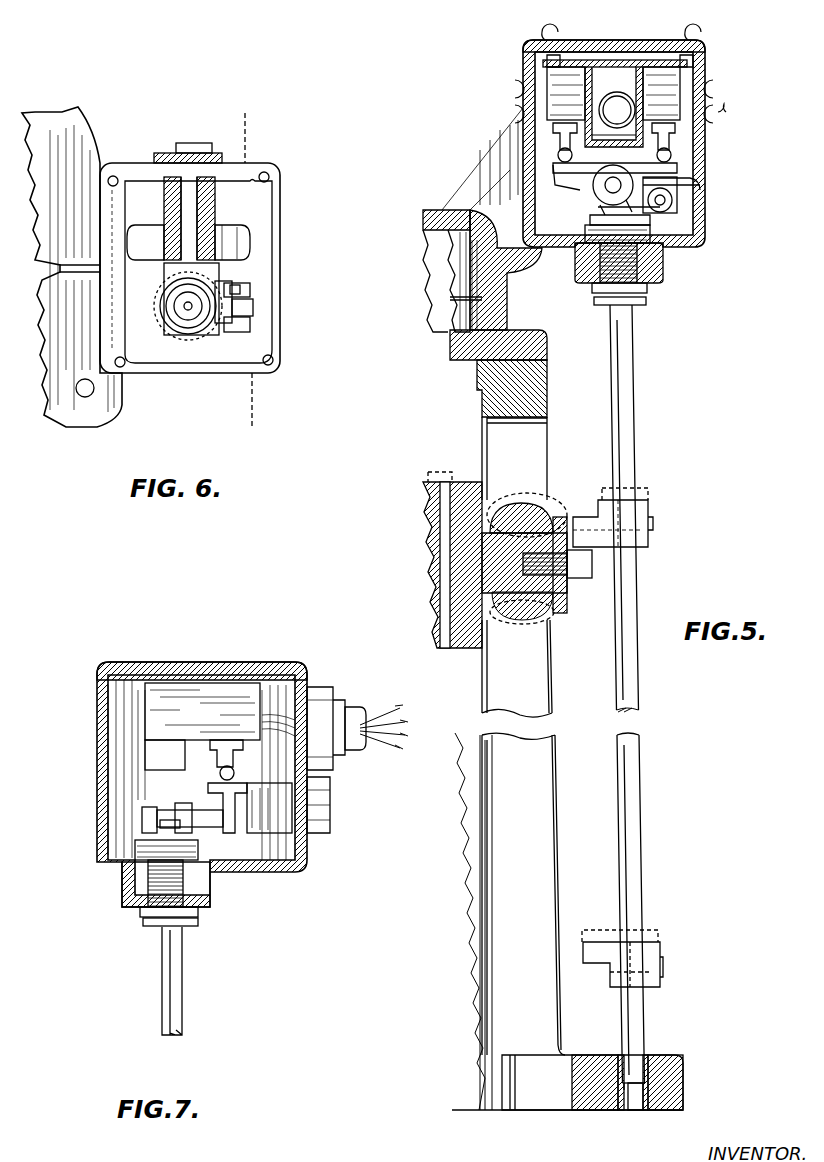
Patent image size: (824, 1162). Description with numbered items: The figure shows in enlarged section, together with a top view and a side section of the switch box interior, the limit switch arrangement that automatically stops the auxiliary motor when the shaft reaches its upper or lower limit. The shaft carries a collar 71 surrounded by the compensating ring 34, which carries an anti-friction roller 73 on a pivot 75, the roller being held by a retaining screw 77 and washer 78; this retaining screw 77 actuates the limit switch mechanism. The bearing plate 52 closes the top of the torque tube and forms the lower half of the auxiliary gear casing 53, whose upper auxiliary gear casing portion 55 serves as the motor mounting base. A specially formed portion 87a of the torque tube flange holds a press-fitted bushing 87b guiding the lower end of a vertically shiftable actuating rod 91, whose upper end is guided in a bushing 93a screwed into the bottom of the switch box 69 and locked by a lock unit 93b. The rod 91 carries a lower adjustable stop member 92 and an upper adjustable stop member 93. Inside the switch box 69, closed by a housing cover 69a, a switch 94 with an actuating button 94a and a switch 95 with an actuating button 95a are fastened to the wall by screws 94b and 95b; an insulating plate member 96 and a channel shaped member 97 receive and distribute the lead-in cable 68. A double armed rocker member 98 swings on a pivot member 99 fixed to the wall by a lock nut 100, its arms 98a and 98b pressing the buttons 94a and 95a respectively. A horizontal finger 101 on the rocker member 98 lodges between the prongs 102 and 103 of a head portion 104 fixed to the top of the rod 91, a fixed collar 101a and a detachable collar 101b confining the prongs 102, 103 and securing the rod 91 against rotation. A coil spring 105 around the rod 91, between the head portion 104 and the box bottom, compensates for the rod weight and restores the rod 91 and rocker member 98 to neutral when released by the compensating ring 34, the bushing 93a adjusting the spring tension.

In FIG. 5, the compensating ring 34 is at (456, 648).
In FIG. 5, the bearing plate 52 is at (547, 348).
In FIG. 5, the auxiliary gear casing 53 is at (507, 295).
In FIG. 6, the upper auxiliary gear casing portion 55 is at (62, 112).
In FIG. 5, the upper auxiliary gear casing portion 55 is at (440, 210).
In FIG. 7, the lead-in cable 68 is at (360, 712).
In FIG. 6, the switch box 69 is at (288, 250).
In FIG. 7, the switch box 69 is at (97, 740).
In FIG. 5, the switch box 69 is at (705, 218).
In FIG. 7, the housing cover 69a is at (183, 662).
In FIG. 5, the housing cover 69a is at (560, 40).
In FIG. 5, the collar 71 is at (440, 648).
In FIG. 5, the anti-friction roller 73 is at (535, 632).
In FIG. 5, the pivot 75 is at (538, 525).
In FIG. 5, the retaining screw 77 is at (578, 580).
In FIG. 5, the washer 78 is at (565, 612).
In FIG. 5, the specially formed portion 87a is at (660, 1056).
In FIG. 5, the bushing 87b is at (621, 1115).
In FIG. 7, the actuating rod 91 is at (182, 1016).
In FIG. 5, the actuating rod 91 is at (636, 441).
In FIG. 5, the lower adjustable stop member 92 is at (594, 960).
In FIG. 5, the upper adjustable stop member 93 is at (645, 545).
In FIG. 7, the bushing 93a is at (150, 925).
In FIG. 5, the bushing 93a is at (632, 305).
In FIG. 7, the lock unit 93b is at (140, 912).
In FIG. 5, the lock unit 93b is at (596, 295).
In FIG. 7, the switch 94 is at (220, 771).
In FIG. 5, the switch 94 is at (690, 85).
In FIG. 7, the actuating button 94a is at (224, 768).
In FIG. 5, the actuating button 94a is at (672, 150).
In FIG. 5, the screw 94b is at (710, 95).
In FIG. 5, the switch 95 is at (562, 100).
In FIG. 5, the actuating button 95a is at (560, 150).
In FIG. 5, the screw 95b is at (552, 60).
In FIG. 5, the insulating plate member 96 is at (605, 63).
In FIG. 5, the channel shaped member 97 is at (628, 80).
In FIG. 6, the double armed rocker member 98 is at (212, 203).
In FIG. 7, the double armed rocker member 98 is at (265, 815).
In FIG. 5, the double armed rocker member 98 is at (600, 190).
In FIG. 6, the arm 98a is at (238, 237).
In FIG. 7, the arm 98a is at (222, 790).
In FIG. 5, the arm 98a is at (680, 170).
In FIG. 6, the arm 98b is at (161, 237).
In FIG. 5, the arm 98b is at (560, 166).
In FIG. 6, the pivot member 99 is at (192, 203).
In FIG. 7, the pivot member 99 is at (330, 805).
In FIG. 6, the lock nut 100 is at (171, 153).
In FIG. 7, the lock nut 100 is at (310, 840).
In FIG. 6, the finger 101 is at (250, 286).
In FIG. 7, the finger 101 is at (200, 835).
In FIG. 5, the finger 101 is at (675, 200).
In FIG. 6, the fixed collar 101a is at (248, 292).
In FIG. 7, the fixed collar 101a is at (185, 830).
In FIG. 6, the detachable collar 101b is at (248, 324).
In FIG. 7, the detachable collar 101b is at (145, 822).
In FIG. 6, the prong 102 is at (253, 306).
In FIG. 7, the prong 102 is at (162, 800).
In FIG. 5, the prong 102 is at (672, 180).
In FIG. 7, the prong 103 is at (192, 905).
In FIG. 5, the prong 103 is at (665, 235).
In FIG. 6, the head portion 104 is at (207, 327).
In FIG. 7, the head portion 104 is at (142, 808).
In FIG. 5, the head portion 104 is at (598, 225).
In FIG. 6, the coil spring 105 is at (166, 316).
In FIG. 7, the coil spring 105 is at (140, 850).
In FIG. 5, the coil spring 105 is at (683, 252).